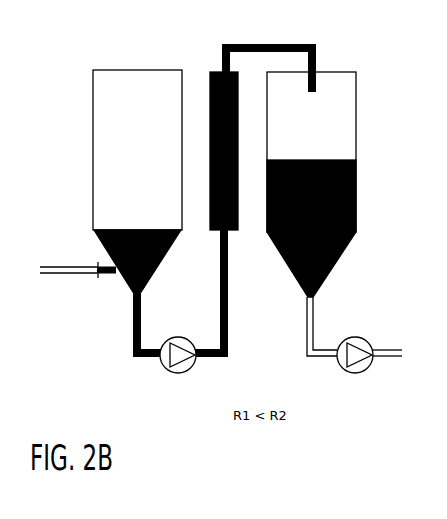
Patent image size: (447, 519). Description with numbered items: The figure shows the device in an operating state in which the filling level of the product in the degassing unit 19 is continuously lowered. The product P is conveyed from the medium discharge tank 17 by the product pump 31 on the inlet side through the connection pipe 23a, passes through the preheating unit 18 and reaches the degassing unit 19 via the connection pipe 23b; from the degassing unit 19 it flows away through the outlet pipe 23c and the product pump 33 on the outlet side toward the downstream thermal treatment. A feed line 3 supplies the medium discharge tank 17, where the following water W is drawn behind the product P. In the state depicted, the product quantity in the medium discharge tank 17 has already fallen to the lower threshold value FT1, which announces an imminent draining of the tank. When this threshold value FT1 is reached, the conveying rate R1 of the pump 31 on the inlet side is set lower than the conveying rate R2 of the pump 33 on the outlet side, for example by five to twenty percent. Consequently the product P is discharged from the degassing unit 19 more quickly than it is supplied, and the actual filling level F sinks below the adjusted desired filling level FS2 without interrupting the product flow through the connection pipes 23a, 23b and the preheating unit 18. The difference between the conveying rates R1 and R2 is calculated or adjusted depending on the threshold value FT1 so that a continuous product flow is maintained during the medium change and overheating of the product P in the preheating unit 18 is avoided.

The feed pipe 3 is at (52, 276).
The medium discharge tank 17 is at (147, 102).
The preheating unit 18 is at (209, 71).
The degassing unit 19 is at (344, 103).
The connection pipe 23a is at (140, 358).
The connection pipe 23b is at (233, 44).
The pipe section 23c is at (304, 321).
The product pump on the inlet side 31 is at (177, 337).
The product pump on the outlet side 33 is at (355, 337).
The lower threshold value FT1 is at (88, 237).
The desired filling level FS2 is at (366, 161).
The water W is at (72, 284).
The product P is at (112, 284).
The filling level F is at (257, 172).
The conveying rate R1 is at (218, 370).
The conveying rate R2 is at (327, 370).